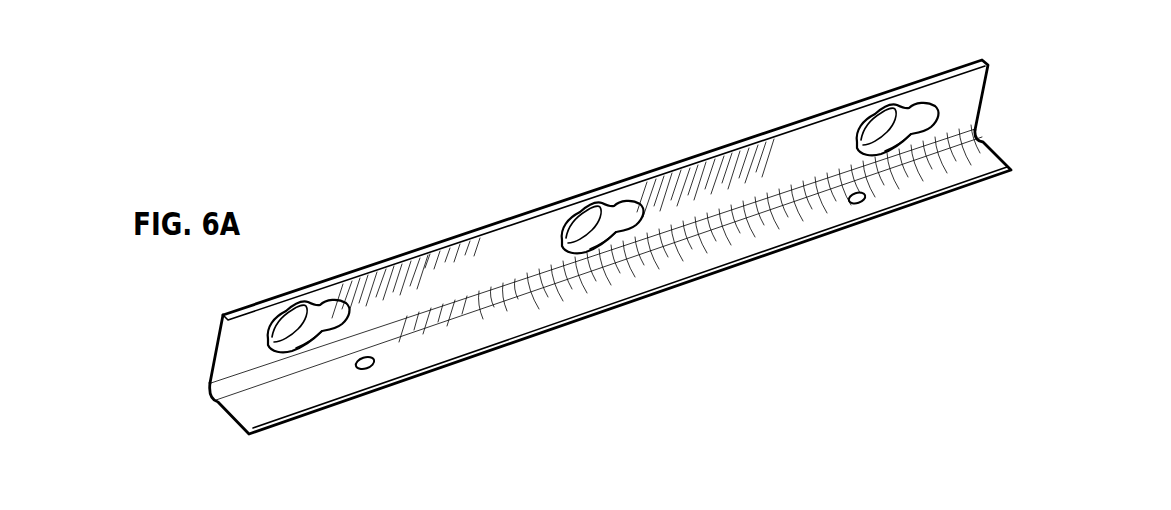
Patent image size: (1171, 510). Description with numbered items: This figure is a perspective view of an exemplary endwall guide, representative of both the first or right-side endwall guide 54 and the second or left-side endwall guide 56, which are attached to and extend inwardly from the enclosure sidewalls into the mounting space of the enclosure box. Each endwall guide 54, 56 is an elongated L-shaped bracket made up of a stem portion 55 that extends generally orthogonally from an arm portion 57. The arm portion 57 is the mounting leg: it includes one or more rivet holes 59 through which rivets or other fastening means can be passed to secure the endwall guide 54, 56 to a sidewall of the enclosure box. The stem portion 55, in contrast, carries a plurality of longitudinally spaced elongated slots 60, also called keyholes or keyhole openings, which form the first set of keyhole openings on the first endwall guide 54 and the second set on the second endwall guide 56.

The first endwall guide 54 is at (660, 236).
The second endwall guide 56 is at (660, 236).
The stem portion 55 is at (992, 87).
The arm portion 57 is at (1008, 157).
The rivet holes 59 is at (376, 366).
The elongated slots 60 is at (272, 328).